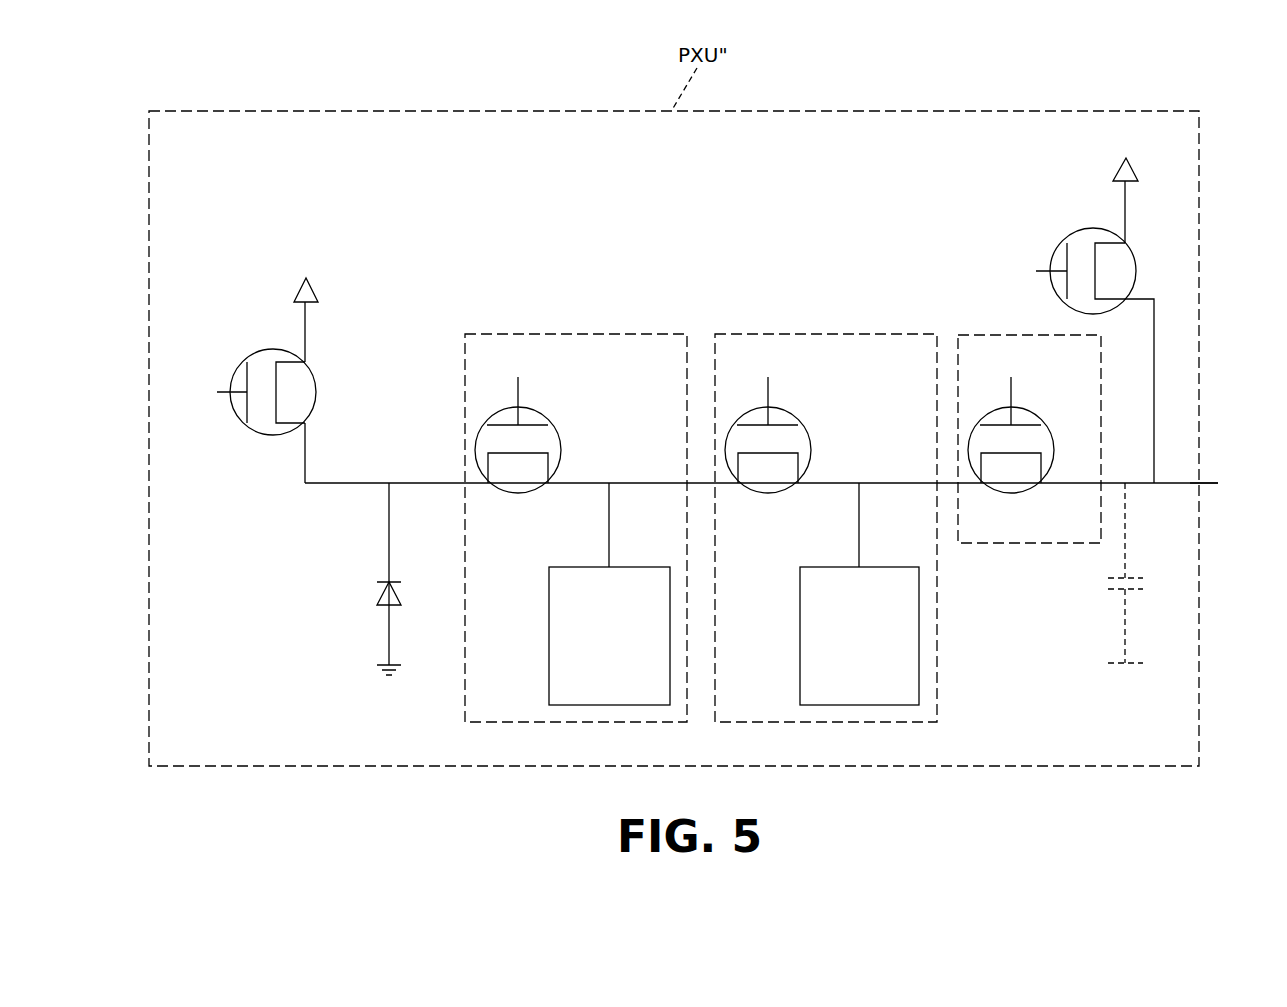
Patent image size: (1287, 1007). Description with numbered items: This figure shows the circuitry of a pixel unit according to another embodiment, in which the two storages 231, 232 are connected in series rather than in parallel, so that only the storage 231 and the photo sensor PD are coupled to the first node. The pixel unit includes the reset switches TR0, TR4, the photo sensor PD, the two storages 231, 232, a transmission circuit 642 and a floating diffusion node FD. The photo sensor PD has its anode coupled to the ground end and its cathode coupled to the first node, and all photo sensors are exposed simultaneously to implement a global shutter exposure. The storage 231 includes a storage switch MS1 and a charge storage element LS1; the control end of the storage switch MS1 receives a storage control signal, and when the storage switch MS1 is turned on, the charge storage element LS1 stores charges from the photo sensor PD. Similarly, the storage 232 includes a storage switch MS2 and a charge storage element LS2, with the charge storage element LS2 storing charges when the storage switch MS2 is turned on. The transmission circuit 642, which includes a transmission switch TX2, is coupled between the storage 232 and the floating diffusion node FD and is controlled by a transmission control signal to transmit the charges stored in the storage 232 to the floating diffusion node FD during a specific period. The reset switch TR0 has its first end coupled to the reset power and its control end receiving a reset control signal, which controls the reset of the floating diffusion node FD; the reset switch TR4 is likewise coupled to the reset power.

The storage 231 is at (575, 330).
The storage 232 is at (825, 330).
The transmission circuit 642 is at (1029, 545).
The reset switch TR0 is at (265, 365).
The photo sensor PD is at (378, 605).
The storage switch MS1 is at (559, 437).
The storage switch MS2 is at (809, 437).
The charge storage element LS1 is at (636, 566).
The charge storage element LS2 is at (886, 566).
The transmission switch TX2 is at (1051, 437).
The reset switch TR4 is at (1083, 245).
The floating diffusion node FD is at (1199, 483).